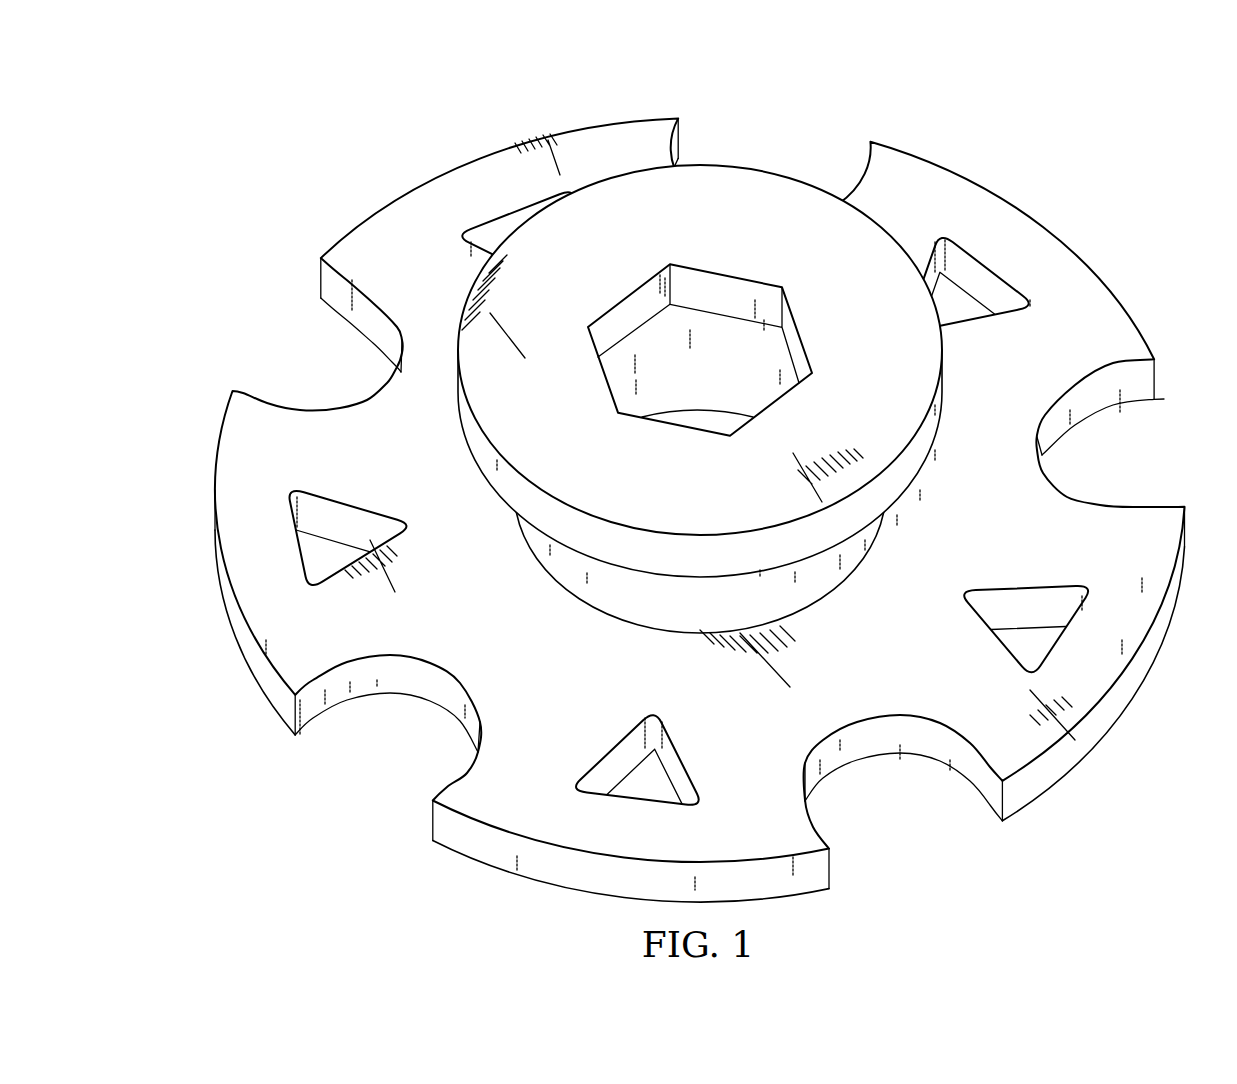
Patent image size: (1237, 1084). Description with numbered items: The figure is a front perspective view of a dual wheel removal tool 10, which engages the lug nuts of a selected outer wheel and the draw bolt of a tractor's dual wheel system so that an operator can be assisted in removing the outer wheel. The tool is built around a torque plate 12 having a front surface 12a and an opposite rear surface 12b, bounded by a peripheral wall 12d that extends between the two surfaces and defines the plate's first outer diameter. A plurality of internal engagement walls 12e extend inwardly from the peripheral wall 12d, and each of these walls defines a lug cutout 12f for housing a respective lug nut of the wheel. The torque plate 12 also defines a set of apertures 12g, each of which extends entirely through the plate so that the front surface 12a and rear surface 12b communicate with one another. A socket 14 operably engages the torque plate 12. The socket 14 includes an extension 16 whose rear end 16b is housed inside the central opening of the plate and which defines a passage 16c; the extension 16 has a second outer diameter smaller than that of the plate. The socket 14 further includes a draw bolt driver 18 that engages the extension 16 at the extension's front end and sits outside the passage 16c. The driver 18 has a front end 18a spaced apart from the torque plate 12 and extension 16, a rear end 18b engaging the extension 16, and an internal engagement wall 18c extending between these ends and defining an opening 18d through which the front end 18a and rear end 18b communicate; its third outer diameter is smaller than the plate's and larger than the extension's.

The dual wheel removal tool 10 is at (322, 93).
The torque plate 12 is at (1118, 180).
The front surface 12a is at (1125, 330).
The rear surface 12b is at (1152, 400).
The peripheral wall 12d is at (320, 285).
The internal engagement walls 12e is at (686, 150).
The lug cutout 12f is at (798, 136).
The set of apertures 12g is at (483, 240).
The socket 14 is at (729, 379).
The extension 16 is at (560, 575).
The rear end 16b is at (707, 418).
The passage 16c is at (717, 327).
The draw bolt driver 18 is at (729, 371).
The front end 18a is at (560, 409).
The rear end 18b is at (908, 494).
The internal engagement wall 18c is at (713, 290).
The opening 18d is at (630, 308).